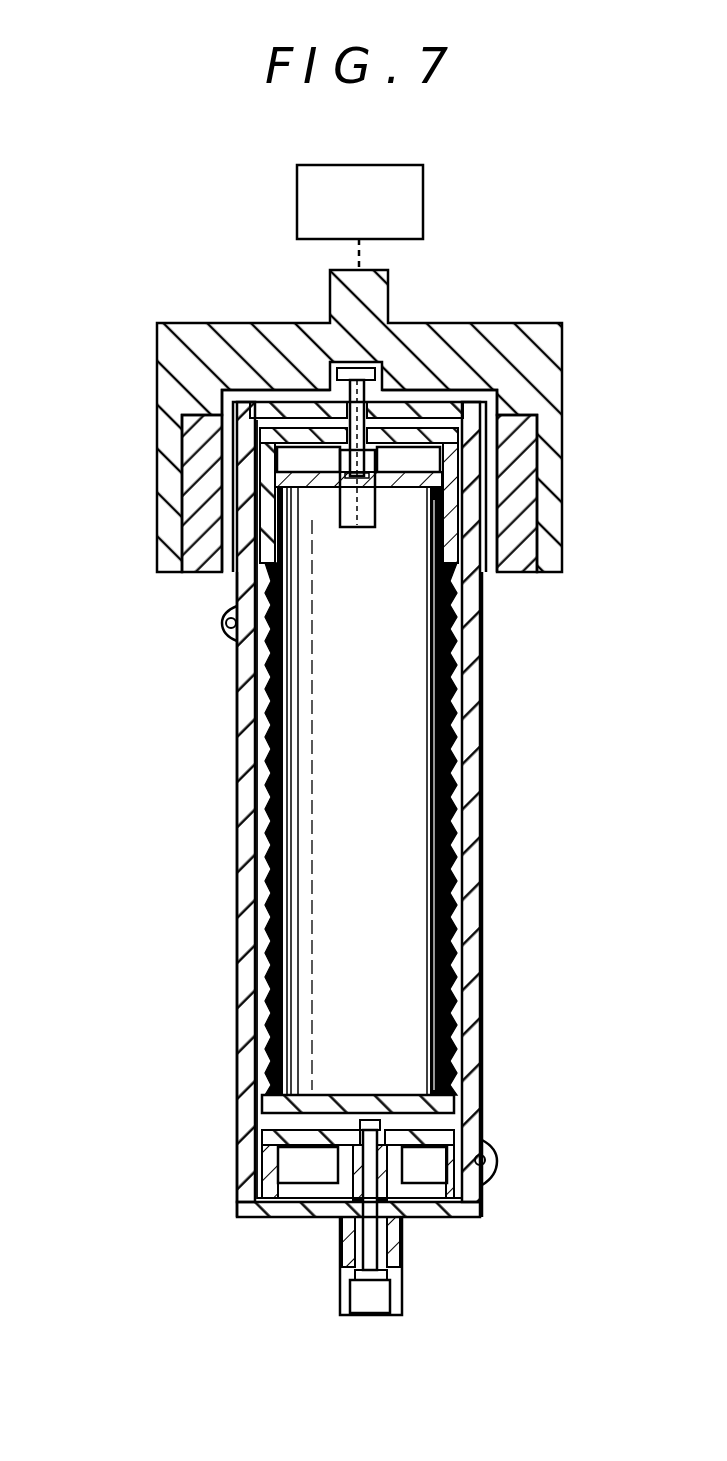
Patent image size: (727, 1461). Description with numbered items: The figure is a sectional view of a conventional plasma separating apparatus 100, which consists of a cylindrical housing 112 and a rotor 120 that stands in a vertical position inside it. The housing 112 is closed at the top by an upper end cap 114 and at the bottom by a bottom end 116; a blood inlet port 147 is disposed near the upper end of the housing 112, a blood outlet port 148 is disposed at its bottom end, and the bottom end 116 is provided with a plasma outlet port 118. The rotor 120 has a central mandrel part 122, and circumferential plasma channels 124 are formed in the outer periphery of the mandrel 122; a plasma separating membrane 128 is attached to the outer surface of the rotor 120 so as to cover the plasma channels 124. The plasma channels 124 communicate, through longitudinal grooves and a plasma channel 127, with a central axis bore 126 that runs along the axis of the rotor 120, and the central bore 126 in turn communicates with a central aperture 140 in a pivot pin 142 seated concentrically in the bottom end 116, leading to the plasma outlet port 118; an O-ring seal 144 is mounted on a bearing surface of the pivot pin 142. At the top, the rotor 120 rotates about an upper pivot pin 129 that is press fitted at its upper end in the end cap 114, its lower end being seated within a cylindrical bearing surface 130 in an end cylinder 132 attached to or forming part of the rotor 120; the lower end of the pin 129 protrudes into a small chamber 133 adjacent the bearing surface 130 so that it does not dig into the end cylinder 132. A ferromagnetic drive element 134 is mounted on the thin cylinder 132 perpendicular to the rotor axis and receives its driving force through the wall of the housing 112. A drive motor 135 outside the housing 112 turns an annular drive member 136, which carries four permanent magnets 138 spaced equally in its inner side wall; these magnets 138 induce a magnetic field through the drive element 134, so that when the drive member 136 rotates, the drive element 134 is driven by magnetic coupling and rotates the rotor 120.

The plasma separating apparatus 100 is at (230, 1000).
The cylindrical housing 112 is at (482, 873).
The upper end cap 114 is at (436, 400).
The bottom end 116 is at (470, 1218).
The plasma outlet port 118 is at (362, 1310).
The rotor 120 is at (438, 850).
The central mandrel part 122 is at (450, 746).
The circumferential plasma channels 124 is at (463, 918).
The central axis bore 126 is at (368, 1125).
The plasma channel 127 is at (280, 1122).
The plasma separating membrane 128 is at (257, 832).
The upper pivot pin 129 is at (375, 372).
The cylindrical bearing surface 130 is at (342, 490).
The end cylinder 132 is at (382, 490).
The small chamber 133 is at (356, 506).
The ferromagnetic drive element 134 is at (402, 482).
The drive motor 135 is at (423, 190).
The annular drive member 136 is at (148, 420).
The permanent magnets 138 is at (195, 556).
The central aperture 140 is at (377, 1243).
The pivot pin 142 is at (358, 1226).
The O-ring seal 144 is at (388, 1146).
The blood inlet port 147 is at (226, 625).
The blood outlet port 148 is at (497, 1158).